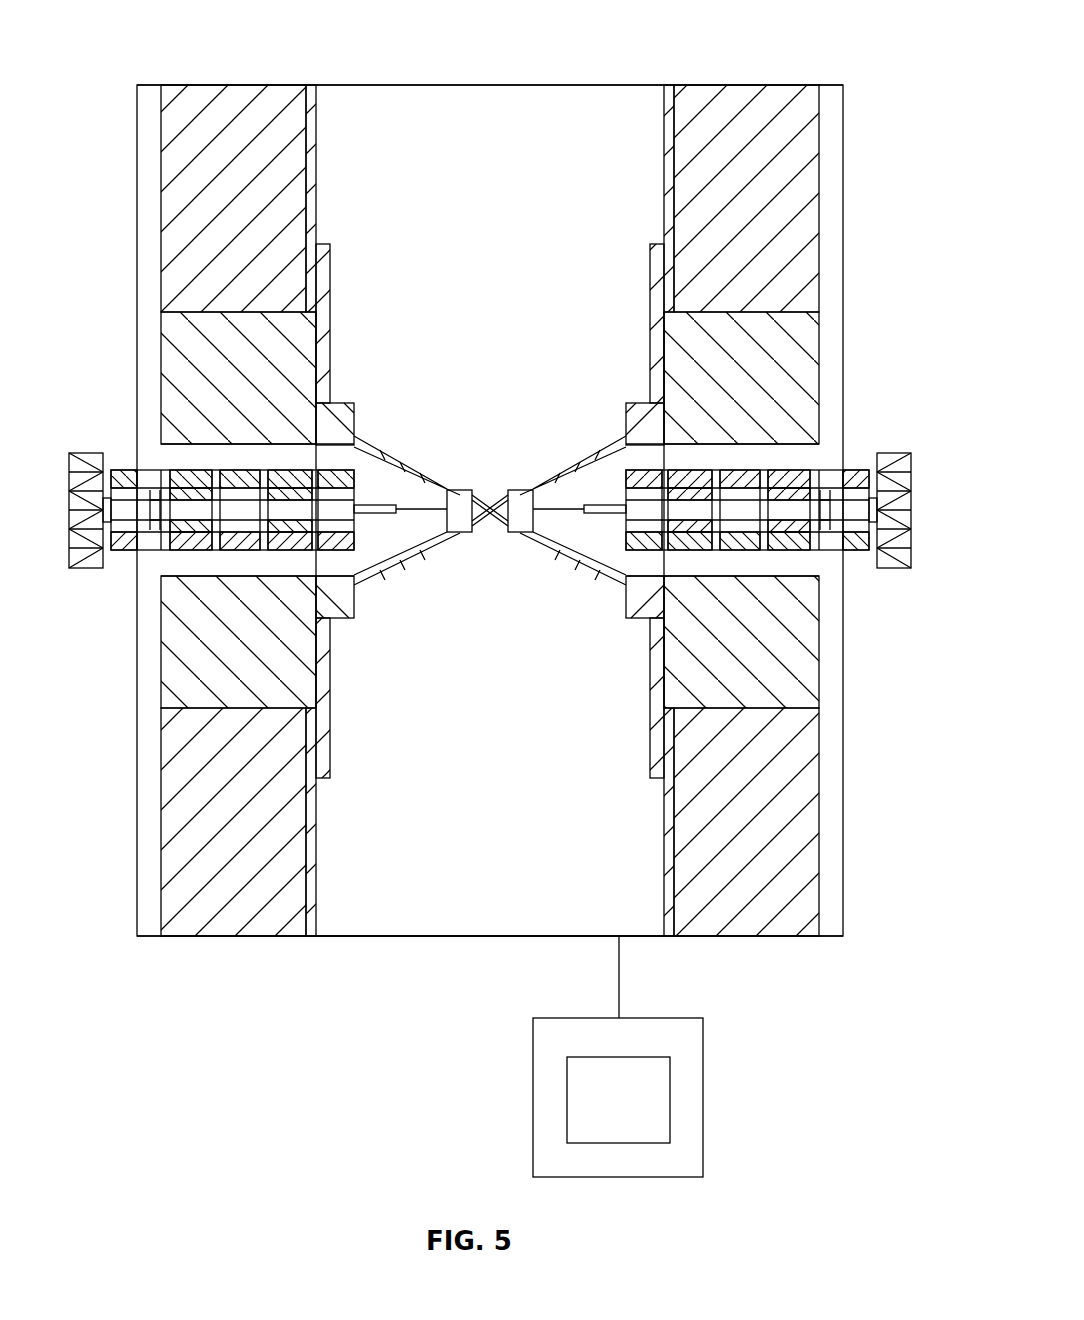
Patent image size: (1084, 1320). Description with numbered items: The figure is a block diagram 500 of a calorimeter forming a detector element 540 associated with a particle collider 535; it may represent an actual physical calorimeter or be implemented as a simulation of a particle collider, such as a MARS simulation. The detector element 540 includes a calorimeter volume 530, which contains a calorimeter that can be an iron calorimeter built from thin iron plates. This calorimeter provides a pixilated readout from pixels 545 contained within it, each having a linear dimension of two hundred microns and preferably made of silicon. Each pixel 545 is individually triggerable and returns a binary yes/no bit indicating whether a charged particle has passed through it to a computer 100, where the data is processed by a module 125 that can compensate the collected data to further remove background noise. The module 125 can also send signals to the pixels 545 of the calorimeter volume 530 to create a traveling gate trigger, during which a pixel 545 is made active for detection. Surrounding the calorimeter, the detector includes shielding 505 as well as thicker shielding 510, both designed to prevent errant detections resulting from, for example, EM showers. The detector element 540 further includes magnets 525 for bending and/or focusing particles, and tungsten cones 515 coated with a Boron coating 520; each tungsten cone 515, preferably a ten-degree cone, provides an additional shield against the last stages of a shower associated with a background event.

The block diagram 500 is at (195, 30).
The shielding 505 is at (237, 98).
The thicker shielding 510 is at (174, 391).
The tungsten cones 515 is at (392, 470).
The Boron coating 520 is at (583, 556).
The magnets 525 is at (185, 530).
The calorimeter volume 530 is at (432, 938).
The particle collider 535 is at (313, 938).
The detector element 540 is at (292, 69).
The pixels 545 is at (468, 900).
The computer 100 is at (645, 1018).
The module 125 is at (610, 1057).